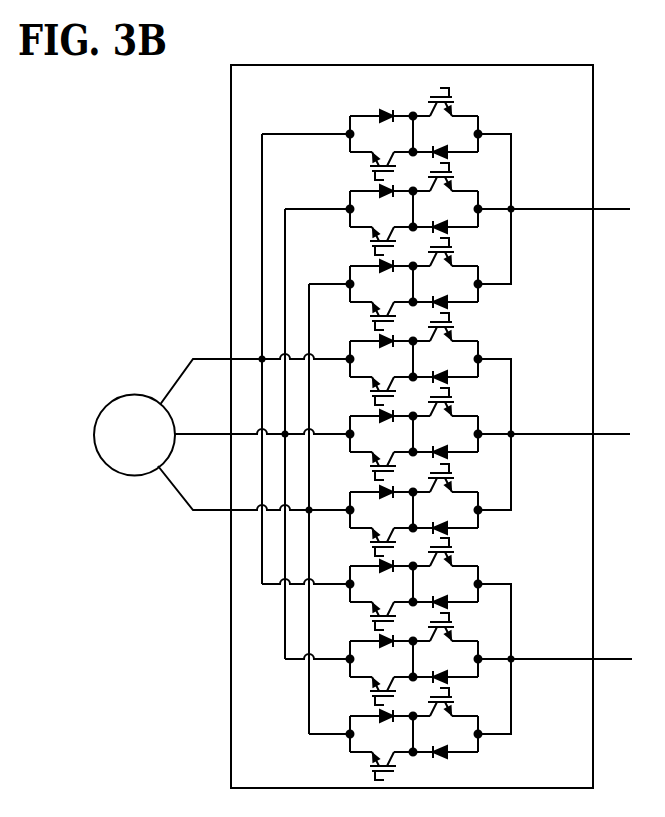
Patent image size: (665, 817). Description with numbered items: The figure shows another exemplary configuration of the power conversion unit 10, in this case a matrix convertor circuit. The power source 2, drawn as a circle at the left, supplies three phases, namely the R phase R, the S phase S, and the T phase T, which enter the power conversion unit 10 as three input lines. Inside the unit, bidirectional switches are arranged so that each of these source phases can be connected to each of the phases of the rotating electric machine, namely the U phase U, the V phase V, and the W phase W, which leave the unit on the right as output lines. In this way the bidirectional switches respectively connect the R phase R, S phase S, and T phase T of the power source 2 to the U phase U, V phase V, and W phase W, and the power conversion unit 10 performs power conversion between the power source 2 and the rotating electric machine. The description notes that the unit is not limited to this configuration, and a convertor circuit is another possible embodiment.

The power source 2 is at (127, 381).
The power conversion unit 10 is at (431, 426).
The R phase R is at (212, 368).
The S phase S is at (230, 421).
The T phase T is at (233, 488).
The U phase U is at (554, 197).
The V phase V is at (554, 422).
The W phase W is at (555, 645).